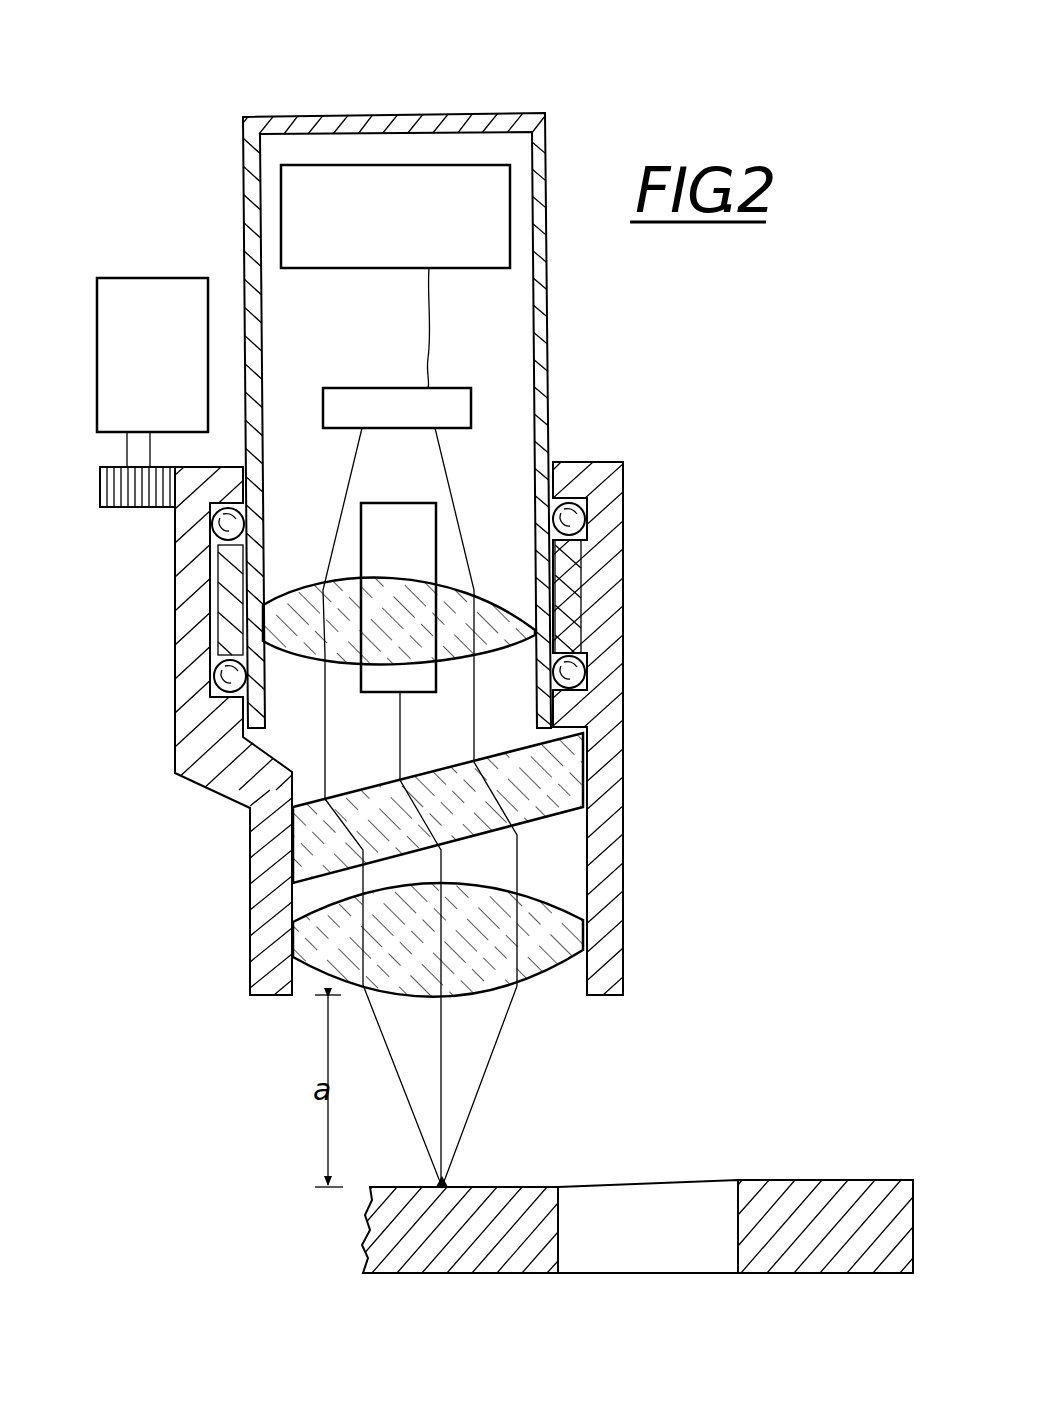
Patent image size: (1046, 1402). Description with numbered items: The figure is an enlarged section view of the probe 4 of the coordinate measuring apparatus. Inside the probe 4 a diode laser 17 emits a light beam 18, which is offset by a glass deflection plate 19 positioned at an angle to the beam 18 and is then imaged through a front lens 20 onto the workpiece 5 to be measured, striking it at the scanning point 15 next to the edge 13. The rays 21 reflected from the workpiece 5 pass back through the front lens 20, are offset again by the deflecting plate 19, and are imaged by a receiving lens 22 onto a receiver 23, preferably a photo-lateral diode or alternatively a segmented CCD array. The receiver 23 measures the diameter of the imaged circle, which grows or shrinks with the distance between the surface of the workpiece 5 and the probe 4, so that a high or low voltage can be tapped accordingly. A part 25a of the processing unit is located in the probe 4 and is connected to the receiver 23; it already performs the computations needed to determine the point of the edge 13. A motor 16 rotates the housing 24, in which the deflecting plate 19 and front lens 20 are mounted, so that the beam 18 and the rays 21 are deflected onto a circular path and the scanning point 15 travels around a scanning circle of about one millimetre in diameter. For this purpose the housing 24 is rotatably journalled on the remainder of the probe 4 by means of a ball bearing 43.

The probe 4 is at (190, 105).
The part of processing unit 25a is at (428, 224).
The receiver 23 is at (384, 398).
The motor 16 is at (107, 352).
The ball bearing 43 is at (569, 519).
The housing 24 is at (187, 597).
The receiving lens 22 is at (500, 597).
The diode laser 17 is at (419, 680).
The light beam 18 is at (400, 743).
The glass deflection plate 19 is at (568, 772).
The front lens 20 is at (568, 935).
The reflected rays 21 is at (474, 1100).
The scanning point 15 is at (445, 1185).
The edge 13 is at (558, 1187).
The workpiece 5 is at (806, 1180).